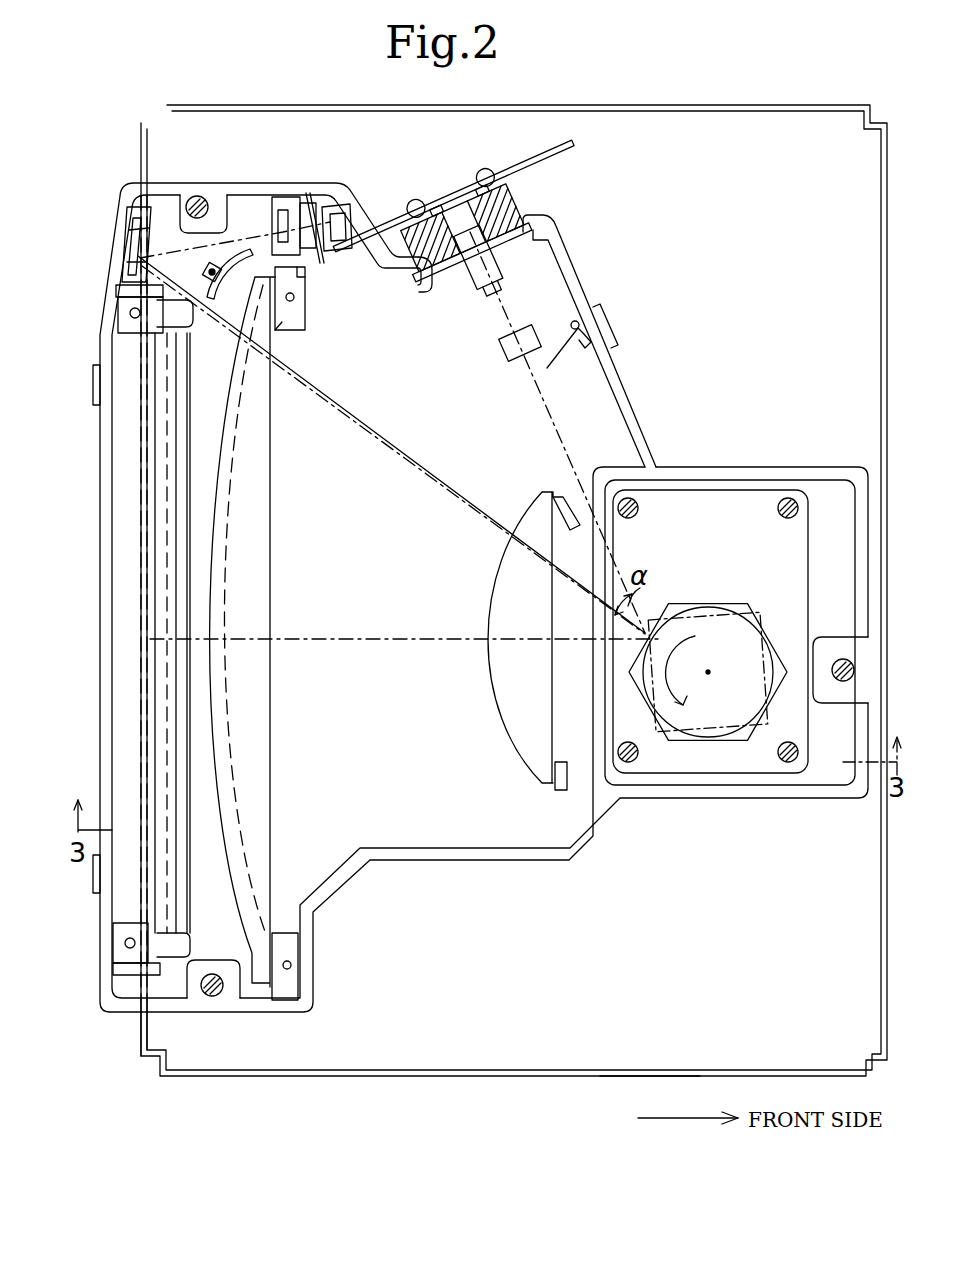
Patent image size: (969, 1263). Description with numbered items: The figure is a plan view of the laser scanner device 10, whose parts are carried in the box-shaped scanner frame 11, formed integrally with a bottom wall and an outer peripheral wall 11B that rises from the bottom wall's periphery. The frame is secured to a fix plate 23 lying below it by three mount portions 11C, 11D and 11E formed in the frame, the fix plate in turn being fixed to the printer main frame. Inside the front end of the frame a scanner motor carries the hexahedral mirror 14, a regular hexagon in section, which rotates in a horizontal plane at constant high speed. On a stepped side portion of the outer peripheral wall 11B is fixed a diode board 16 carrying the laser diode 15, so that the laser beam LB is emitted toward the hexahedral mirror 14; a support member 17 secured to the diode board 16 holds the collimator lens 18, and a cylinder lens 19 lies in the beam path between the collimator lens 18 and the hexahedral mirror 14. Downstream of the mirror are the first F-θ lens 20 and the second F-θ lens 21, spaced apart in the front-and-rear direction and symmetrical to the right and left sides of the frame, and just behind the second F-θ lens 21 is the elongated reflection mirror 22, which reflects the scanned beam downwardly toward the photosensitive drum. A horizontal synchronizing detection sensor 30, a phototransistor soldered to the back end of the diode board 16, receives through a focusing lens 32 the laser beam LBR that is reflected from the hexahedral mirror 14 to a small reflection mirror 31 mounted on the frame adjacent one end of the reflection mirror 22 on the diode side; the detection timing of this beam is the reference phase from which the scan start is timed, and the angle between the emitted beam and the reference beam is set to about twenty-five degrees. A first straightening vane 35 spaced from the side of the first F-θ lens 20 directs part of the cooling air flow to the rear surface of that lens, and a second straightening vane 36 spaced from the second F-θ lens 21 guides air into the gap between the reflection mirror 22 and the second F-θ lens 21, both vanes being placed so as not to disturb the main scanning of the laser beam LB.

The laser scanner device 10 is at (688, 262).
The scanner frame 11 is at (598, 820).
The outer peripheral wall 11B is at (565, 233).
The mount portion 11C is at (186, 999).
The mount portion 11D is at (831, 703).
The mount portion 11E is at (221, 214).
The hexahedral mirror 14 is at (720, 605).
The laser diode 15 is at (516, 200).
The diode board 16 is at (511, 169).
The support member 17 is at (420, 284).
The collimator lens 18 is at (473, 280).
The cylinder lens 19 is at (504, 352).
The first F-θ lens 20 is at (496, 708).
The second F-θ lens 21 is at (276, 742).
The reflection mirror 22 is at (152, 628).
The fix plate 23 is at (471, 1077).
The horizontal synchronizing detection sensor 30 is at (340, 194).
The reflection mirror 31 is at (131, 247).
The focusing lens 32 is at (300, 210).
The first straightening vane 35 is at (553, 345).
The second straightening vane 36 is at (231, 284).
The laser beam LB is at (392, 427).
The laser beam at scan reference phase LBR is at (546, 582).